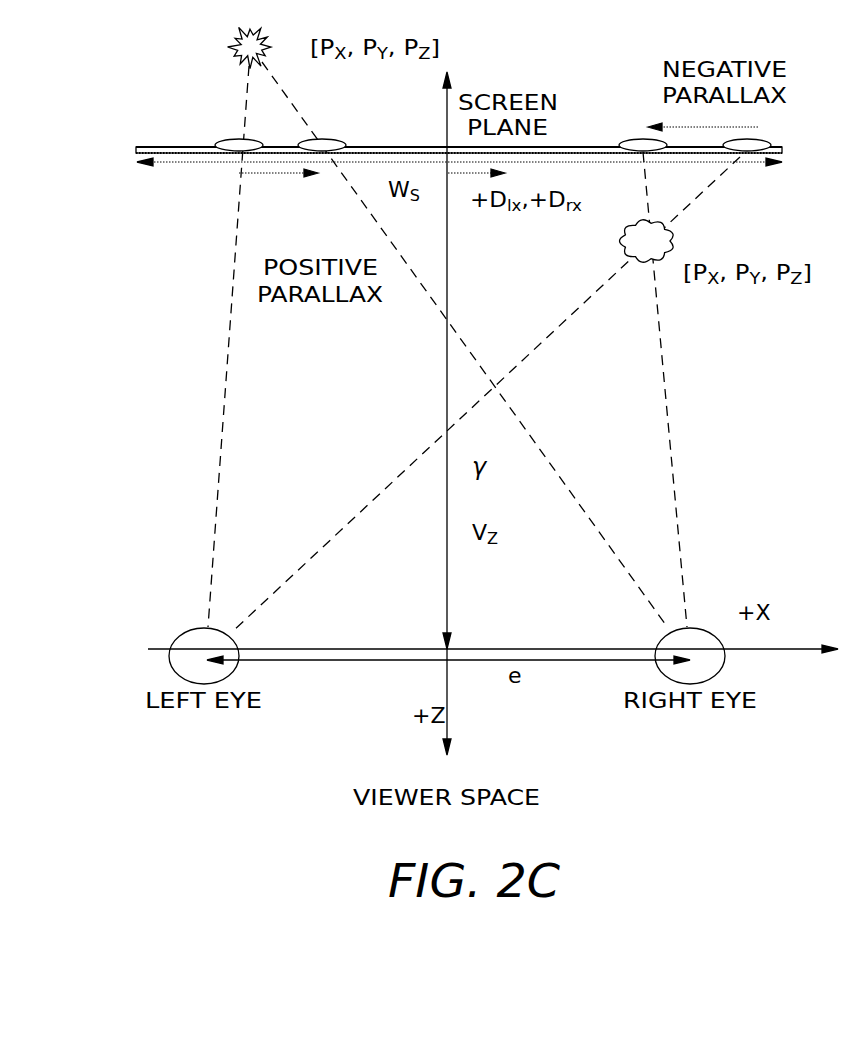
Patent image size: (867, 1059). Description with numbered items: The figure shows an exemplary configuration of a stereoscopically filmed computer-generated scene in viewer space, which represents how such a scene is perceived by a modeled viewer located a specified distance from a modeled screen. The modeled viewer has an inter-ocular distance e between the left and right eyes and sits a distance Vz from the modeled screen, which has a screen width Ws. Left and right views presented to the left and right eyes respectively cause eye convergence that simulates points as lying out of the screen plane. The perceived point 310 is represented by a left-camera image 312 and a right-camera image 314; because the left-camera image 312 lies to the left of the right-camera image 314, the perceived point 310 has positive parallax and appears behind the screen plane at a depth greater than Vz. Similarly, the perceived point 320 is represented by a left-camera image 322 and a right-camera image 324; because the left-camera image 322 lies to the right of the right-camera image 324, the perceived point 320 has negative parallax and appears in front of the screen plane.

The perceived point 310 is at (229, 48).
The left-camera image 312 is at (230, 140).
The right-camera image 314 is at (337, 138).
The perceived point 320 is at (670, 234).
The left-camera image 322 is at (770, 142).
The right-camera image 324 is at (638, 138).